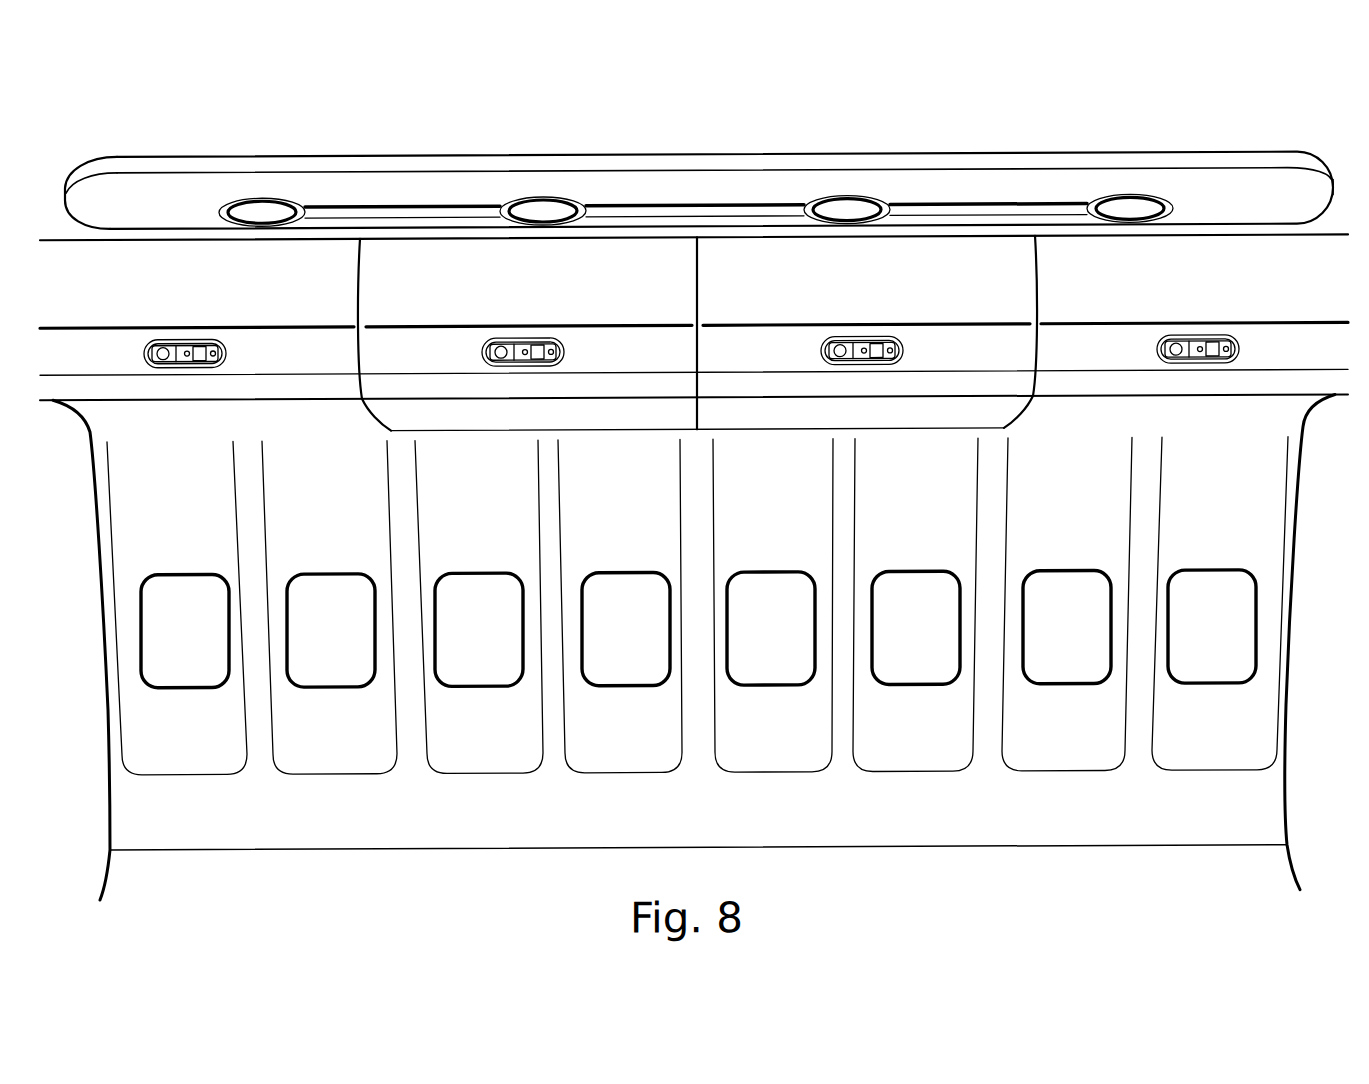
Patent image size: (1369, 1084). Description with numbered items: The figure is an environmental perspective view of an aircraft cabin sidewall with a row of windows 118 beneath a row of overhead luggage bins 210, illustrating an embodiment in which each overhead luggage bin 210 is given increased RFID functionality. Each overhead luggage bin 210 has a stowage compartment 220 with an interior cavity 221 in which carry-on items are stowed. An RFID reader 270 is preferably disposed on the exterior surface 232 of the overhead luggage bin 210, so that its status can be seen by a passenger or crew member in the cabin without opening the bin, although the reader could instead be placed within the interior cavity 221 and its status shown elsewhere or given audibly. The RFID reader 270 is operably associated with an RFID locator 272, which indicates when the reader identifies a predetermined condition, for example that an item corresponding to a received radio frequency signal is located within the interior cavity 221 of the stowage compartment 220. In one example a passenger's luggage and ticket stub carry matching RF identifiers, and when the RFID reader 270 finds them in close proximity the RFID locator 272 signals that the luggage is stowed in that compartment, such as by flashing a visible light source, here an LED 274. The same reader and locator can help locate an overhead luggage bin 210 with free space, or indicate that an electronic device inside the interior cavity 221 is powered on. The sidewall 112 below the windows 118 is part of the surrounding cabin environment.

The sidewall 112 is at (401, 931).
The windows 118 is at (1057, 662).
The overhead luggage bin 210 is at (438, 246).
The stowage compartment 220 is at (322, 292).
The interior cavity 221 is at (525, 267).
The exterior surface 232 is at (431, 303).
The RFID reader 270 is at (691, 308).
The RFID locator 272 is at (517, 362).
The LED 274 is at (500, 362).